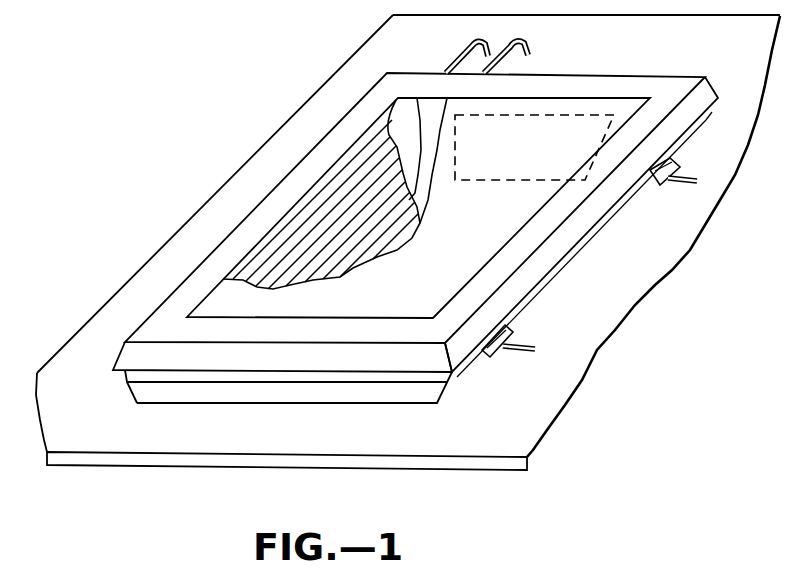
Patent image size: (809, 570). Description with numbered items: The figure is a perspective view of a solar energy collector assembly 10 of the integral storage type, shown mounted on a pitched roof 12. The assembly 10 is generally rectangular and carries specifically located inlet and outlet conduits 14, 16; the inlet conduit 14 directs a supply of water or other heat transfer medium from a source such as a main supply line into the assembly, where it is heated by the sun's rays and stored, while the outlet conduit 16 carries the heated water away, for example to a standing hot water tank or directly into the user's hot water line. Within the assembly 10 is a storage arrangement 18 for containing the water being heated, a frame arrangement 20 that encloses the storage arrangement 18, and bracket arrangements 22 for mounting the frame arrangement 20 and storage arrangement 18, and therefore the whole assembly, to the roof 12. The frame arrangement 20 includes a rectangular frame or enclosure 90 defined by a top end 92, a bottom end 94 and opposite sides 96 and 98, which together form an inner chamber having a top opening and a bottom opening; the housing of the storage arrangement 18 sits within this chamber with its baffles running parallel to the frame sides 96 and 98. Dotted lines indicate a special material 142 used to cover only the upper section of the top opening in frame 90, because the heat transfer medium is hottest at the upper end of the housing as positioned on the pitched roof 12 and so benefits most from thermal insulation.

The solar energy collector assembly 10 is at (350, 102).
The pitched roof 12 is at (213, 225).
The inlet conduit 14 is at (519, 44).
The outlet conduit 16 is at (455, 55).
The storage arrangement 18 is at (337, 228).
The frame arrangement 20 is at (225, 418).
The bracket arrangements 22 is at (667, 190).
The rectangular frame 90 is at (150, 398).
The top end 92 is at (703, 118).
The bottom end 94 is at (312, 392).
The frame side 96 is at (572, 258).
The frame side 98 is at (135, 403).
The special material 142 is at (598, 112).